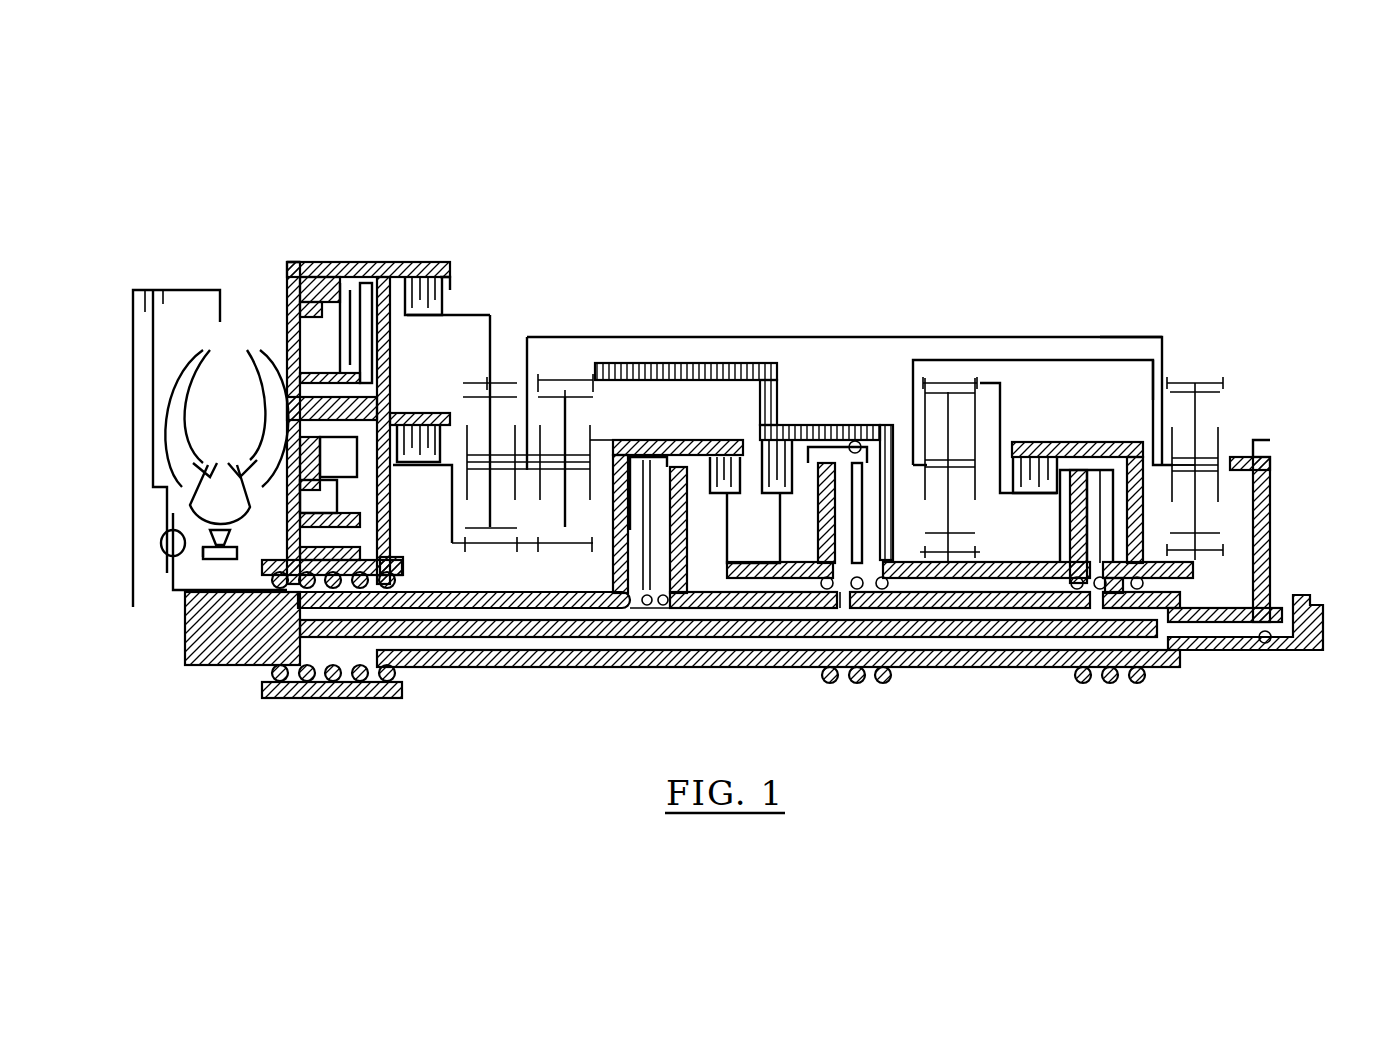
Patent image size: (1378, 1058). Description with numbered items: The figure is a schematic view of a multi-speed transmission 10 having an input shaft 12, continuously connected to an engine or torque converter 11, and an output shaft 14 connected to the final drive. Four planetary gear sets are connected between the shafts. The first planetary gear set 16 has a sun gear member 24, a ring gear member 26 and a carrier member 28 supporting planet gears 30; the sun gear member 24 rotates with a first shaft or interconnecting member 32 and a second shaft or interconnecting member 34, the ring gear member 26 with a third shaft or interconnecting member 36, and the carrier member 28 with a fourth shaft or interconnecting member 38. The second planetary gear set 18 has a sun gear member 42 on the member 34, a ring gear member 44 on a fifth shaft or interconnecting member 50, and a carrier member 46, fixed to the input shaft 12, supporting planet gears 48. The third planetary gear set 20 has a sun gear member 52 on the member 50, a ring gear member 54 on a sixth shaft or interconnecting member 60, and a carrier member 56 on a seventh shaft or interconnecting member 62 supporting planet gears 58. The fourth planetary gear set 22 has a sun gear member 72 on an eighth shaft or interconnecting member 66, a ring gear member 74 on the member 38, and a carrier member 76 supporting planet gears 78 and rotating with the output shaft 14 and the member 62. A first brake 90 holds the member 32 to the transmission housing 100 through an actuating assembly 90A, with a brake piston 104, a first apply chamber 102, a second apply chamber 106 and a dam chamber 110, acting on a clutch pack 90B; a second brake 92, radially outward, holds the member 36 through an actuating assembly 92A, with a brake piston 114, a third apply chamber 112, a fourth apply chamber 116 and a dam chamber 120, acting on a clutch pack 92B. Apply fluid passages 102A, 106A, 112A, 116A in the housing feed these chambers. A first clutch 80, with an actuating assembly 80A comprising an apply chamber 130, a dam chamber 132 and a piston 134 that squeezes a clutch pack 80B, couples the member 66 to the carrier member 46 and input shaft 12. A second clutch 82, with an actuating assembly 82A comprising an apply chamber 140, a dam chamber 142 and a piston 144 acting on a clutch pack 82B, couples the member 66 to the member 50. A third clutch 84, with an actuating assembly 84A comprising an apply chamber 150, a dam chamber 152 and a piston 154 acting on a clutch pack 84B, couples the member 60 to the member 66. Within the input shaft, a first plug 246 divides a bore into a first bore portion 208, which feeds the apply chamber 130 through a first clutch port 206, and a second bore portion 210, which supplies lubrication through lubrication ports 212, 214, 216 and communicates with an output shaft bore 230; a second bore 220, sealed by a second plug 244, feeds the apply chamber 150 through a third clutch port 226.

The multi-speed transmission 10 is at (1066, 201).
The torque converter 11 is at (232, 300).
The input shaft 12 is at (218, 665).
The output shaft 14 is at (1268, 512).
The first planetary gear set 16 is at (514, 357).
The second planetary gear set 18 is at (590, 363).
The third planetary gear set 20 is at (997, 562).
The fourth planetary gear set 22 is at (1242, 364).
The sun gear member 24 is at (485, 545).
The ring gear member 26 is at (508, 360).
The carrier member 28 is at (467, 490).
The planet gears 30 is at (468, 380).
The first shaft or interconnecting member 32 is at (452, 530).
The second shaft or interconnecting member 34 is at (530, 545).
The third shaft or interconnecting member 36 is at (492, 318).
The fourth shaft or interconnecting member 38 is at (793, 360).
The sun gear member 42 is at (577, 545).
The ring gear member 44 is at (550, 378).
The carrier member 46 is at (593, 440).
The planet gears 48 is at (578, 397).
The fifth shaft or interconnecting member 50 is at (697, 421).
The sun gear member 52 is at (968, 655).
The ring gear member 54 is at (937, 380).
The carrier member 56 is at (980, 407).
The planet gears 58 is at (967, 380).
The sixth shaft or interconnecting member 60 is at (1003, 437).
The seventh shaft or interconnecting member 62 is at (912, 365).
The eighth shaft or interconnecting member 66 is at (723, 573).
The sun gear member 72 is at (1268, 567).
The ring gear member 74 is at (1210, 383).
The carrier member 76 is at (1172, 440).
The planet gears 78 is at (1225, 392).
The first clutch 80 is at (725, 363).
The actuating assembly 80A is at (598, 572).
The clutch pack 80B is at (750, 468).
The second clutch 82 is at (855, 370).
The actuating assembly 82A is at (806, 554).
The clutch pack 82B is at (760, 503).
The third clutch 84 is at (1052, 362).
The actuating assembly 84A is at (1103, 376).
The clutch pack 84B is at (1020, 363).
The first brake 90 is at (421, 567).
The actuating assembly 90A is at (272, 528).
The clutch pack 90B is at (290, 393).
The second brake 92 is at (462, 290).
The actuating assembly 92A is at (288, 281).
The clutch pack 92B is at (416, 333).
The transmission housing 100 is at (360, 317).
The first apply chamber 102 is at (287, 513).
The first apply fluid passage 102A is at (287, 503).
The brake piston 104 is at (402, 447).
The second apply chamber 106 is at (290, 408).
The second apply fluid passage 106A is at (365, 423).
The dam chamber 110 is at (372, 530).
The third apply chamber 112 is at (392, 282).
The third apply fluid passage 112A is at (372, 300).
The brake piston 114 is at (463, 383).
The fourth apply chamber 116 is at (377, 313).
The fourth apply fluid passage 116A is at (315, 307).
The dam chamber 120 is at (287, 377).
The apply chamber 130 is at (605, 497).
The dam chamber 132 is at (665, 485).
The piston 134 is at (728, 450).
The apply chamber 140 is at (880, 425).
The dam chamber 142 is at (888, 684).
The piston 144 is at (823, 445).
The apply chamber 150 is at (1147, 515).
The dam chamber 152 is at (1070, 545).
The piston 154 is at (1058, 490).
The first clutch port 206 is at (637, 605).
The first bore portion 208 is at (503, 613).
The second bore portion 210 is at (933, 640).
The lubrication port 212 is at (700, 642).
The lubrication port 214 is at (828, 684).
The lubrication port 216 is at (1075, 668).
The second bore 220 is at (748, 640).
The third clutch port 226 is at (1125, 668).
The output shaft bore 230 is at (1283, 652).
The second plug 244 is at (1097, 672).
The first plug 246 is at (648, 612).